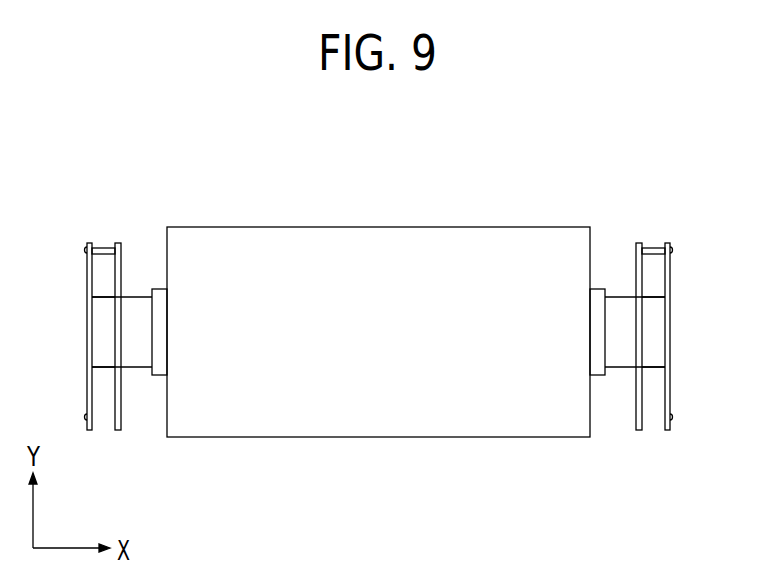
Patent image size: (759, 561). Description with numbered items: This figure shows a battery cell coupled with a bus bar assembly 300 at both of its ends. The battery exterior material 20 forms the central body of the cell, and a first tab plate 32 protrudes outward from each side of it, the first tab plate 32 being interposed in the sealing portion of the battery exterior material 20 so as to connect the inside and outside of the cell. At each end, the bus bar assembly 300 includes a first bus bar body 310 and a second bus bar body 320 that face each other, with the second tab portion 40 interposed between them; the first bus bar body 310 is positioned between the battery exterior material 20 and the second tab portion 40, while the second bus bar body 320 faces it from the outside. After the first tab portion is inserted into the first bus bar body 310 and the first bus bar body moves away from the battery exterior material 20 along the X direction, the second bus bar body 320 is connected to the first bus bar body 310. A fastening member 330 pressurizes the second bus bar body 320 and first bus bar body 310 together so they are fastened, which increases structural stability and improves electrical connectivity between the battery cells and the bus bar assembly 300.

The battery exterior material 20 is at (378, 238).
The first tab plate 32 is at (137, 308).
The second tab portion 40 is at (102, 313).
The bus bar assembly 300 is at (145, 165).
The first bus bar body 310 is at (117, 243).
The second bus bar body 320 is at (88, 243).
The fastening member 330 is at (100, 250).